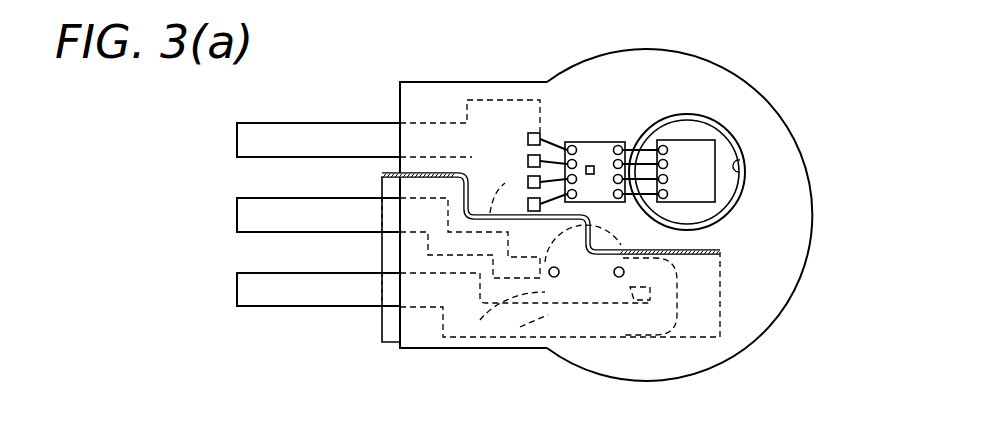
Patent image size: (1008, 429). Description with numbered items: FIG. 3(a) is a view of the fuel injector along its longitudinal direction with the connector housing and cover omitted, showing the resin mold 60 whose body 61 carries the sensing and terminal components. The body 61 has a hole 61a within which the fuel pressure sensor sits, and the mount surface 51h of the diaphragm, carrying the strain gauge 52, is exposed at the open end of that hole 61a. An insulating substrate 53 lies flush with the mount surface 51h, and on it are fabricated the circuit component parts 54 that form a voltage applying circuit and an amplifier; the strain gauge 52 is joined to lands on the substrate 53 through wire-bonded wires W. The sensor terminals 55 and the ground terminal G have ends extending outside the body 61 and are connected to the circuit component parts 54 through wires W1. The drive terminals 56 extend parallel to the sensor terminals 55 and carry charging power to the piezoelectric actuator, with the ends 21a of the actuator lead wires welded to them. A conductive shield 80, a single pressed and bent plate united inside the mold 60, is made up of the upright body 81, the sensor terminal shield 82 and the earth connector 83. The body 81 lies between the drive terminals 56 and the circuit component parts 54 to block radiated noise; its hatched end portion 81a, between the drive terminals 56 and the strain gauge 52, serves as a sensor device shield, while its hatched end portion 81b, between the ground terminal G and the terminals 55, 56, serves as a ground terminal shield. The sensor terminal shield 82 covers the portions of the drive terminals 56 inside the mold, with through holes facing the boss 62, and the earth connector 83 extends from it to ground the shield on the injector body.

The resin mold 60 is at (722, 56).
The body 61 is at (740, 110).
The mount surface 51h is at (745, 150).
The hole 61a is at (738, 166).
The strain gauge 52 is at (714, 190).
The insulating substrate 53 is at (612, 142).
The circuit component parts 54 is at (590, 165).
The wires W is at (636, 160).
The wires W1 is at (548, 148).
The sensor terminals 55 is at (528, 204).
The ground terminal G is at (237, 136).
The drive terminals 56 is at (237, 212).
The sensor terminal shield 82 is at (393, 252).
The upright body 81 is at (586, 262).
The end portion 81a is at (720, 252).
The end portion 81b is at (420, 173).
The ends of the lead wires 21a is at (555, 280).
The conductive shield 80 is at (383, 334).
The boss 62 is at (480, 320).
The earth connector 83 is at (520, 327).